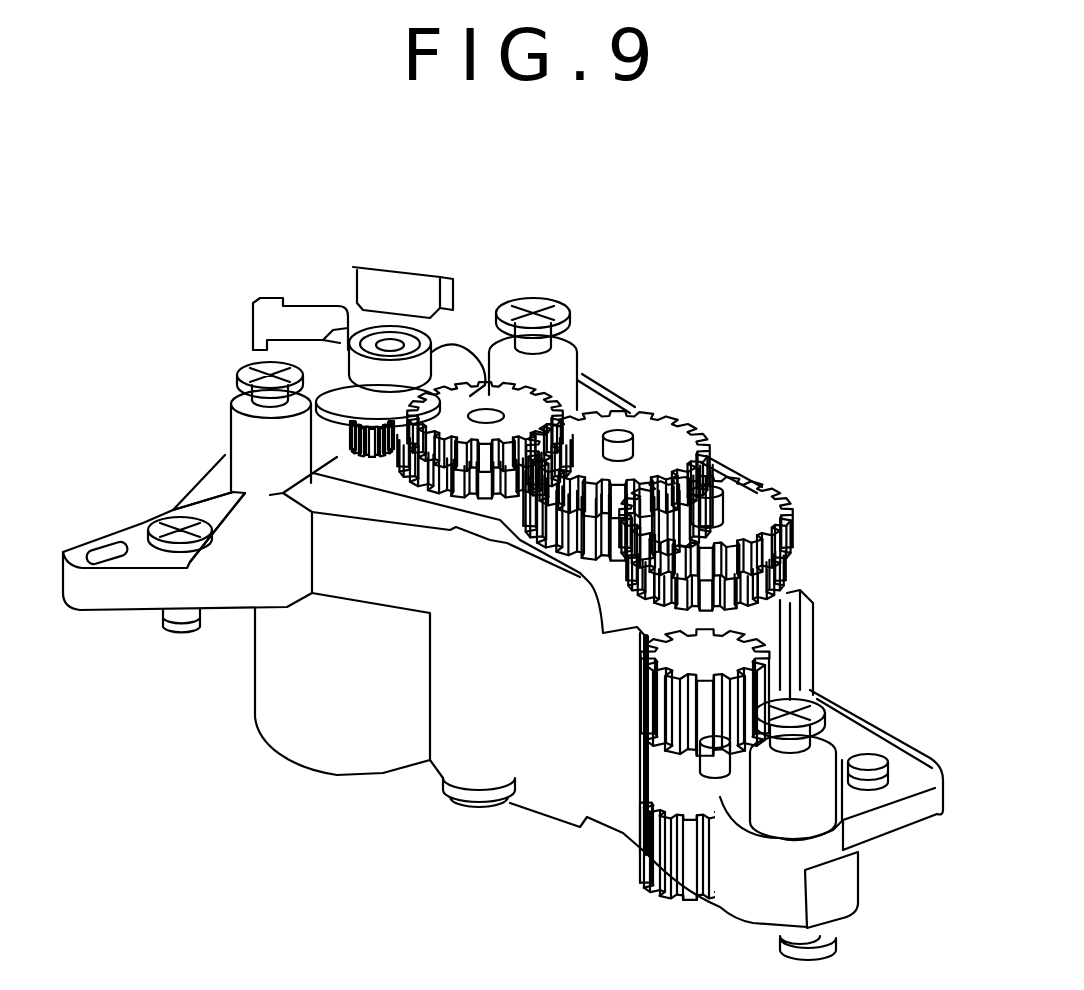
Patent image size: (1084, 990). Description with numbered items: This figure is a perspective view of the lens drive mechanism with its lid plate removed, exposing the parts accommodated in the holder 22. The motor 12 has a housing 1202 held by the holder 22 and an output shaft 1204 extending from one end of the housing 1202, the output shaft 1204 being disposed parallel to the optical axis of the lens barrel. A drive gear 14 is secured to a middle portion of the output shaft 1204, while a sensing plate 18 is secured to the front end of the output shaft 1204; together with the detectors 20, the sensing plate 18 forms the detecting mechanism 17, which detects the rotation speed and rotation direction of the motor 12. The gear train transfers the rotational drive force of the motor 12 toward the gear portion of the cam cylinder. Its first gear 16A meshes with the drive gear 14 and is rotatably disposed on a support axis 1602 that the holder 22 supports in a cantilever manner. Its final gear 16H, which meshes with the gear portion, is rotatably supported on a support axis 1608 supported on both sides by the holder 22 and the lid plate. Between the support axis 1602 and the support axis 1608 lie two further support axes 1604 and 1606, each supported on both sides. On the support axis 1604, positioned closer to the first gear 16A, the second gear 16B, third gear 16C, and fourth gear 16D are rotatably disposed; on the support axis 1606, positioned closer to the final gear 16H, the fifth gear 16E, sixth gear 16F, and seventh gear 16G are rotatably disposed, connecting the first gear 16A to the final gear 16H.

The detecting mechanism 17 is at (226, 224).
The motor 12 is at (285, 713).
The housing 1202 is at (549, 692).
The output shaft 1204 is at (387, 343).
The drive gear 14 is at (337, 450).
The first gear 16A is at (490, 392).
The second gear 16B is at (657, 447).
The third gear 16C is at (545, 555).
The fourth gear 16D is at (612, 633).
The fifth gear 16E is at (743, 517).
The sixth gear 16F is at (770, 577).
The seventh gear 16G is at (760, 645).
The final gear 16H is at (678, 853).
The support axis 1602 is at (497, 410).
The support axis 1604 is at (619, 430).
The support axis 1606 is at (700, 487).
The support axis 1608 is at (627, 827).
The sensing plate 18 is at (463, 363).
The detectors 20 is at (318, 315).
The holder 22 is at (224, 458).